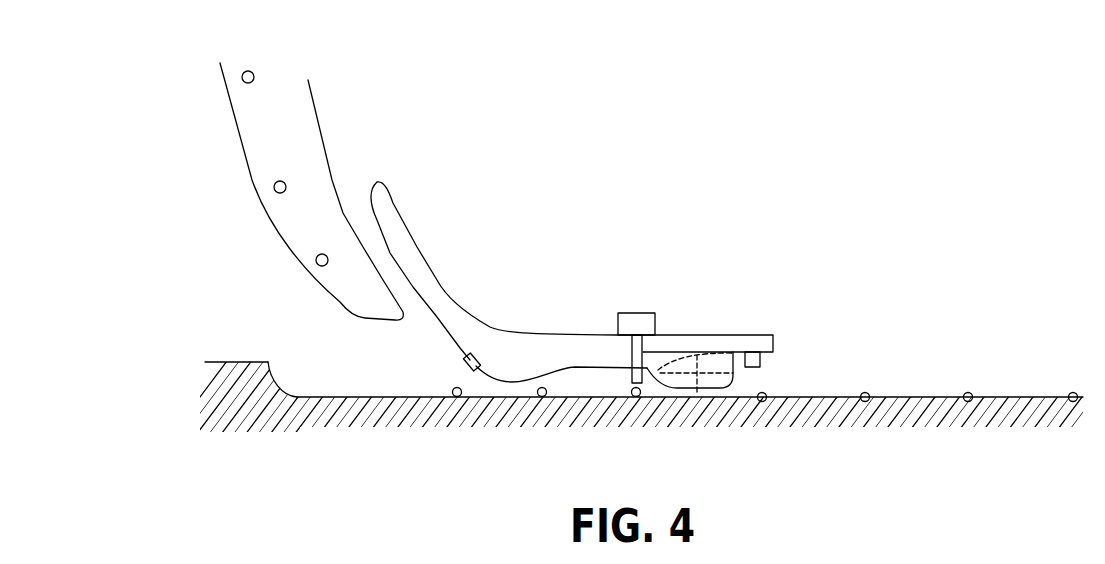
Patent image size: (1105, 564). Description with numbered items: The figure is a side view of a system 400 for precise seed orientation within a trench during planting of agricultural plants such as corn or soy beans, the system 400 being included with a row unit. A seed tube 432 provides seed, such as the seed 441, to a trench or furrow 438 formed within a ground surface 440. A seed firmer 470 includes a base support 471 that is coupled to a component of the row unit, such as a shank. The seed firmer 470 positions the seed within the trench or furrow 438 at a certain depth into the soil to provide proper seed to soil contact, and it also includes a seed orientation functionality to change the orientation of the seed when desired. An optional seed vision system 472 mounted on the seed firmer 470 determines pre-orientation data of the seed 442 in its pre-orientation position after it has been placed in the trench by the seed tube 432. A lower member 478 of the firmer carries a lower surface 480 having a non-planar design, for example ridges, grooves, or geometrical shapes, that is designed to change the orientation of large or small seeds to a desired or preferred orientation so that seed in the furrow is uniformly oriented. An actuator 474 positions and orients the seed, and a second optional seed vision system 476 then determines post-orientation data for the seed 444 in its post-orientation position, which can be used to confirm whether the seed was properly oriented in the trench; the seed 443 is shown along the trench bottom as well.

The system 400 is at (737, 33).
The seed tube 432 is at (237, 145).
The seed 441 is at (276, 189).
The ground surface 440 is at (248, 359).
The trench or furrow 438 is at (296, 380).
The seed 442 is at (452, 391).
The seed 443 is at (634, 399).
The seed 444 is at (777, 401).
The seed firmer 470 is at (533, 299).
The base support 471 is at (540, 367).
The seed vision system 472 is at (473, 355).
The actuator 474 is at (640, 312).
The seed vision system 476 is at (762, 360).
The lower member 478 is at (697, 392).
The lower surface 480 is at (660, 400).